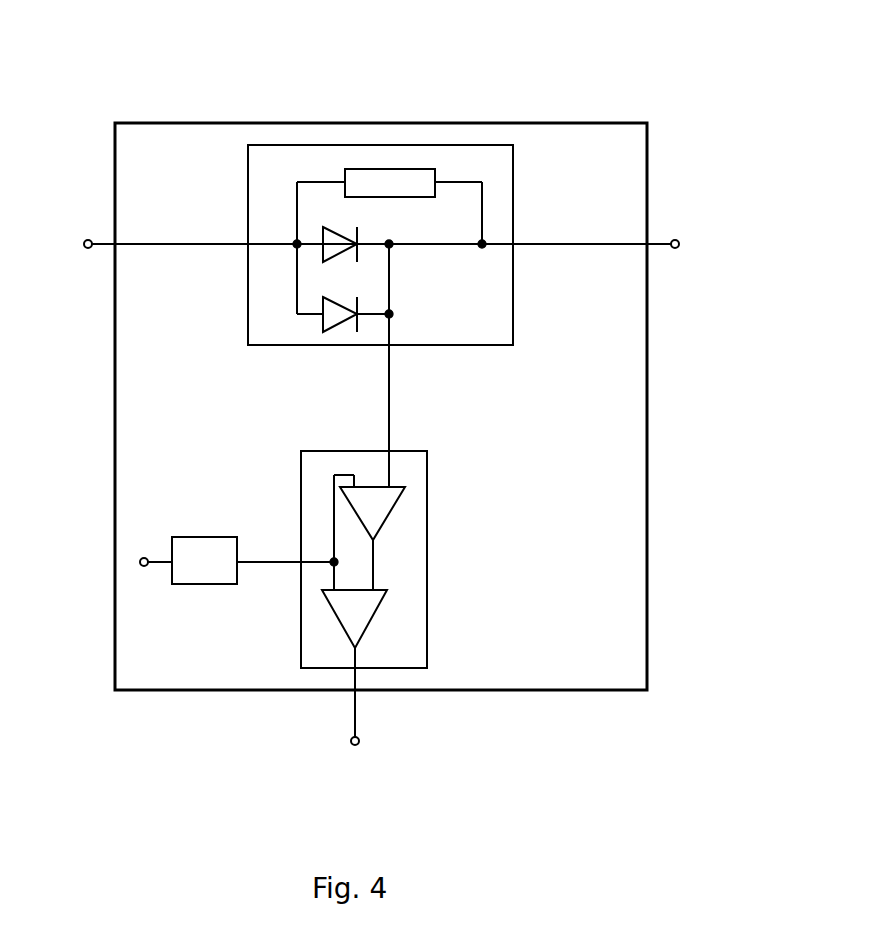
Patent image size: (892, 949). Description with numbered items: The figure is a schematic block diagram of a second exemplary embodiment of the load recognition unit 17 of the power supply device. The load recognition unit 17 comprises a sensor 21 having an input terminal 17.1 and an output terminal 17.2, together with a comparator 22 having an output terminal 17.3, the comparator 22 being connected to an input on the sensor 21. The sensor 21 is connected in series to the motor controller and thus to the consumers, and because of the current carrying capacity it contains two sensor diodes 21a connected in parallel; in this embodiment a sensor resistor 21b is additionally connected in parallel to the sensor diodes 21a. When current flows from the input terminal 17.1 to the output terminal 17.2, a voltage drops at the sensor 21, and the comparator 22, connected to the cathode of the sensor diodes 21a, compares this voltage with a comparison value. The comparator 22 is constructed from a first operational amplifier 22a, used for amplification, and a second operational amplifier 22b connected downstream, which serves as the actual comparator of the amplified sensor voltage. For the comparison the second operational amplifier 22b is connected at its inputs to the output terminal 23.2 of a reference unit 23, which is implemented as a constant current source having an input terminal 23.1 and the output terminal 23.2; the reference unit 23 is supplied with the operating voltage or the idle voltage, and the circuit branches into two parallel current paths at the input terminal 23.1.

The load recognition unit 17 is at (503, 124).
The input terminal 17.1 is at (84, 248).
The output terminal 17.2 is at (679, 249).
The output terminal 17.3 is at (349, 747).
The sensor 21 is at (494, 328).
The sensor diode 21a is at (323, 229).
The sensor resistor 21b is at (373, 169).
The comparator 22 is at (419, 662).
The first operational amplifier 22a is at (382, 502).
The second operational amplifier 22b is at (341, 613).
The reference unit 23 is at (219, 575).
The input terminal 23.1 is at (161, 562).
The output terminal 23.2 is at (263, 562).